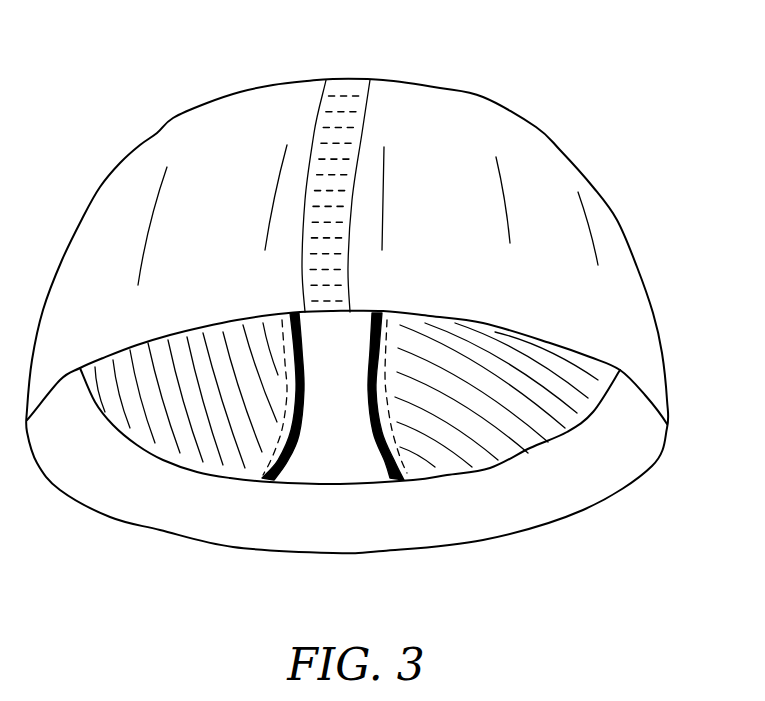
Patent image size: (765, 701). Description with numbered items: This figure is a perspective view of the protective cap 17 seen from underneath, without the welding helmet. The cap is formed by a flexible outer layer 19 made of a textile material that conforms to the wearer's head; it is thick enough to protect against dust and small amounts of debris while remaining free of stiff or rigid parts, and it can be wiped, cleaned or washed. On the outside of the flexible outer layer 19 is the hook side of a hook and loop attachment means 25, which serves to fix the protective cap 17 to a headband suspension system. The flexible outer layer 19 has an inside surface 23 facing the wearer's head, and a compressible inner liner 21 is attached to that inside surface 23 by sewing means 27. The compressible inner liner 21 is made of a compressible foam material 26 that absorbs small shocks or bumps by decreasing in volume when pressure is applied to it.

The protective cap 17 is at (535, 130).
The flexible outer layer 19 is at (558, 255).
The compressible inner liner 21 is at (485, 442).
The inside surface 23 is at (338, 437).
The hook and loop attachment means 25 is at (358, 78).
The compressible foam material 26 is at (218, 425).
The sewing means 27 is at (383, 455).